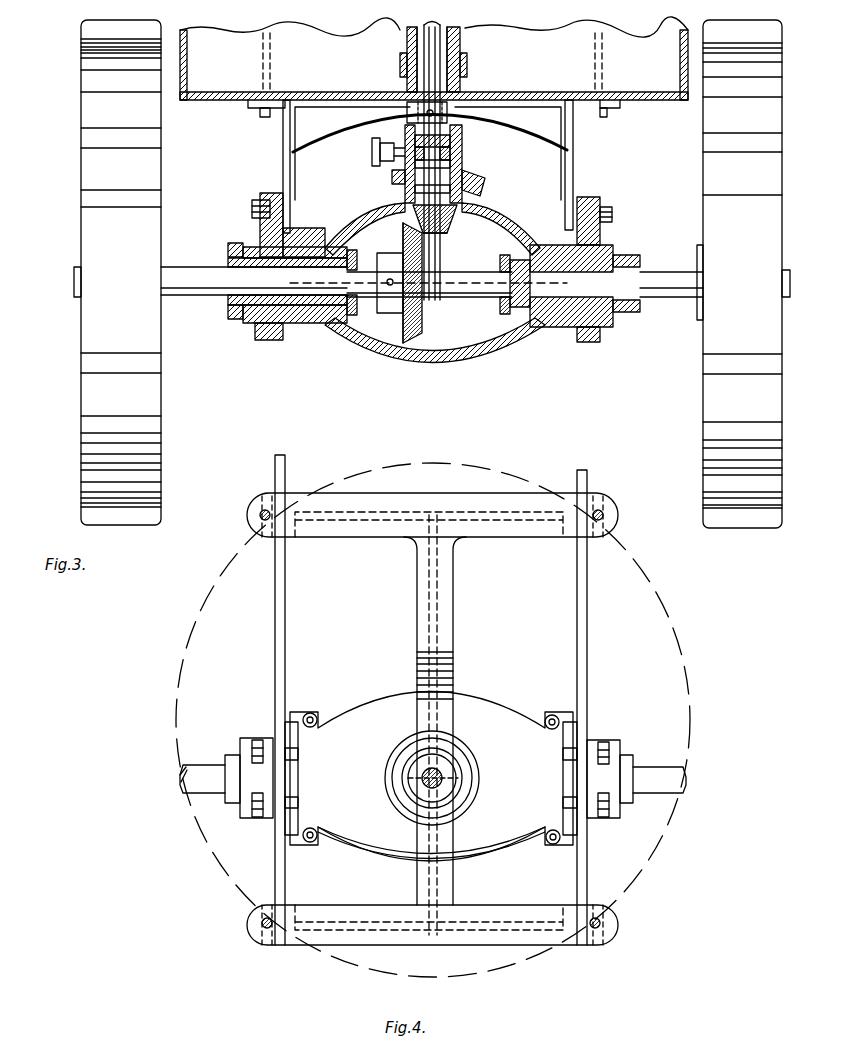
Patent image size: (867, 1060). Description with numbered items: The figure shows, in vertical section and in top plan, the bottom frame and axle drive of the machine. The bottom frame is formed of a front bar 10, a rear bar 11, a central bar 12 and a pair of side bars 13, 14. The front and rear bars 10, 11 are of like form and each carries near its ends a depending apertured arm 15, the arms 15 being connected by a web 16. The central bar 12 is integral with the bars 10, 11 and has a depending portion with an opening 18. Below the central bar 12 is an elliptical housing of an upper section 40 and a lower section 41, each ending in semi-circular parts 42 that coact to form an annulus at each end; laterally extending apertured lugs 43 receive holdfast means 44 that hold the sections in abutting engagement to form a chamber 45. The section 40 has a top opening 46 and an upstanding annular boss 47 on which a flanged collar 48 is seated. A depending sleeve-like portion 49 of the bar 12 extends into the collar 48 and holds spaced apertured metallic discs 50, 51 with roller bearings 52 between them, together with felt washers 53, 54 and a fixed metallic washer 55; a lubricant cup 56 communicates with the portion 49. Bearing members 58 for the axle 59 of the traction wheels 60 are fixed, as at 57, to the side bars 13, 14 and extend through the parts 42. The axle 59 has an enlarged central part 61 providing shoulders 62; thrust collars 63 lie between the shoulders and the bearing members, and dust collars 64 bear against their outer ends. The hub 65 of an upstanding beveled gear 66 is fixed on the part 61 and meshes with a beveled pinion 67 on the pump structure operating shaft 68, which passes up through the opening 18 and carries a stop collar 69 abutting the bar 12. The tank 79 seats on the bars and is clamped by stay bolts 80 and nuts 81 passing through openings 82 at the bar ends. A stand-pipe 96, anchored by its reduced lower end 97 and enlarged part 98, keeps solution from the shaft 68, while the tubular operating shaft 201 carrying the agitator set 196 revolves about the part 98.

In FIG. 4, the front bar 10 is at (365, 537).
In FIG. 3, the rear bar 11 is at (545, 92).
In FIG. 4, the rear bar 11 is at (336, 930).
In FIG. 4, the central bar 12 is at (453, 612).
In FIG. 4, the side bar 13 is at (275, 633).
In FIG. 4, the side bar 14 is at (587, 644).
In FIG. 3, the depending apertured arm 15 is at (283, 152).
In FIG. 3, the web 16 is at (555, 131).
In FIG. 3, the opening 18 is at (447, 120).
In FIG. 4, the opening 18 is at (442, 772).
In FIG. 3, the upper housing section 40 is at (352, 214).
In FIG. 4, the upper housing section 40 is at (372, 835).
In FIG. 3, the lower housing section 41 is at (480, 362).
In FIG. 3, the semi-circular part 42 is at (305, 230).
In FIG. 4, the apertured lug 43 is at (332, 712).
In FIG. 4, the holdfast means 44 is at (310, 712).
In FIG. 3, the chamber 45 is at (498, 205).
In FIG. 3, the opening 46 is at (470, 212).
In FIG. 3, the annular boss 47 is at (480, 190).
In FIG. 3, the flanged collar 48 is at (462, 160).
In FIG. 3, the sleeve-like portion 49 is at (505, 140).
In FIG. 3, the apertured metallic disc 50 is at (400, 124).
In FIG. 3, the apertured metallic disc 51 is at (392, 178).
In FIG. 3, the roller bearings 52 is at (452, 212).
In FIG. 3, the felt washer 53 is at (465, 110).
In FIG. 3, the felt washer 54 is at (455, 222).
In FIG. 3, the metallic washer 55 is at (440, 233).
In FIG. 3, the lubricant cup 56 is at (372, 153).
In FIG. 3, the fixing means 57 is at (252, 210).
In FIG. 4, the fixing means 57 is at (250, 746).
In FIG. 3, the bearing member 58 is at (270, 323).
In FIG. 4, the bearing member 58 is at (248, 803).
In FIG. 3, the axle 59 is at (658, 275).
In FIG. 3, the traction wheel 60 is at (96, 408).
In FIG. 3, the enlarged central part 61 is at (450, 300).
In FIG. 3, the shoulder 62 is at (377, 270).
In FIG. 3, the thrust collar 63 is at (352, 315).
In FIG. 3, the dust collar 64 is at (235, 312).
In FIG. 4, the dust collar 64 is at (225, 785).
In FIG. 3, the hub 65 is at (392, 310).
In FIG. 3, the beveled gear 66 is at (412, 340).
In FIG. 3, the beveled pinion 67 is at (395, 196).
In FIG. 3, the pump structure operating shaft 68 is at (424, 42).
In FIG. 4, the pump structure operating shaft 68 is at (460, 779).
In FIG. 3, the stop collar 69 is at (400, 98).
In FIG. 3, the tank 79 is at (213, 100).
In FIG. 3, the stay bolt 80 is at (263, 52).
In FIG. 4, the stay bolt 80 is at (266, 522).
In FIG. 3, the nut 81 is at (265, 116).
In FIG. 4, the opening 82 is at (262, 520).
In FIG. 3, the stand-pipe 96 is at (460, 34).
In FIG. 3, the reduced lower end 97 is at (455, 102).
In FIG. 3, the enlarged part 98 is at (460, 50).
In FIG. 3, the set of agitators 196 is at (400, 65).
In FIG. 3, the tubular operating shaft 201 is at (400, 48).